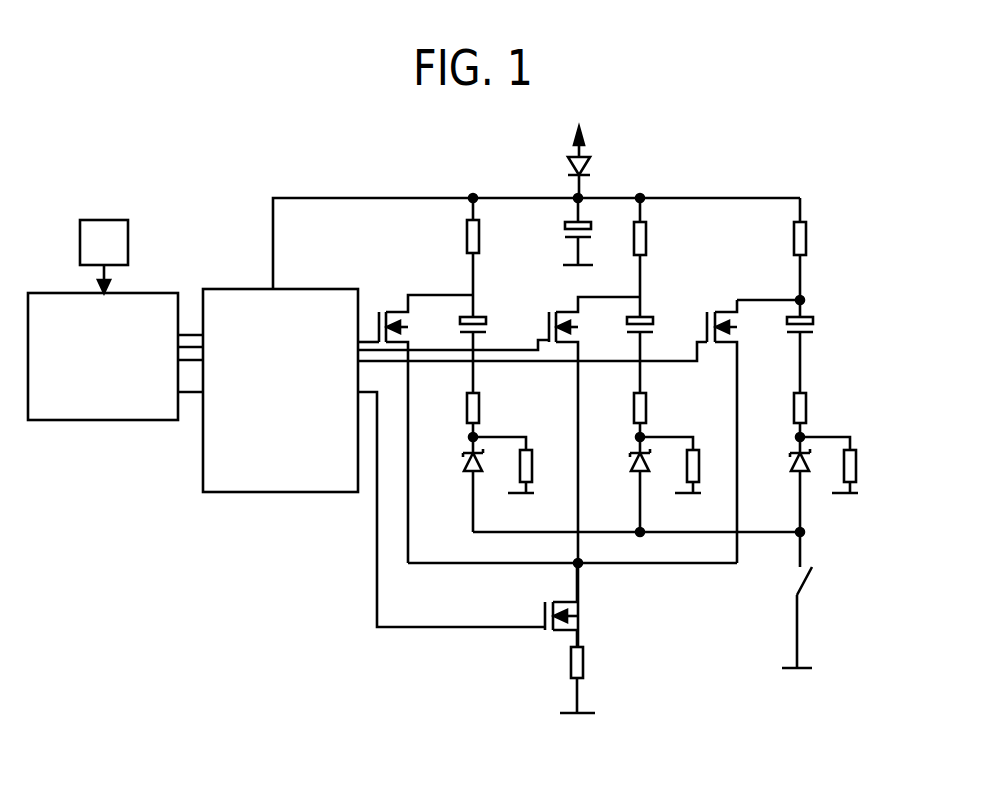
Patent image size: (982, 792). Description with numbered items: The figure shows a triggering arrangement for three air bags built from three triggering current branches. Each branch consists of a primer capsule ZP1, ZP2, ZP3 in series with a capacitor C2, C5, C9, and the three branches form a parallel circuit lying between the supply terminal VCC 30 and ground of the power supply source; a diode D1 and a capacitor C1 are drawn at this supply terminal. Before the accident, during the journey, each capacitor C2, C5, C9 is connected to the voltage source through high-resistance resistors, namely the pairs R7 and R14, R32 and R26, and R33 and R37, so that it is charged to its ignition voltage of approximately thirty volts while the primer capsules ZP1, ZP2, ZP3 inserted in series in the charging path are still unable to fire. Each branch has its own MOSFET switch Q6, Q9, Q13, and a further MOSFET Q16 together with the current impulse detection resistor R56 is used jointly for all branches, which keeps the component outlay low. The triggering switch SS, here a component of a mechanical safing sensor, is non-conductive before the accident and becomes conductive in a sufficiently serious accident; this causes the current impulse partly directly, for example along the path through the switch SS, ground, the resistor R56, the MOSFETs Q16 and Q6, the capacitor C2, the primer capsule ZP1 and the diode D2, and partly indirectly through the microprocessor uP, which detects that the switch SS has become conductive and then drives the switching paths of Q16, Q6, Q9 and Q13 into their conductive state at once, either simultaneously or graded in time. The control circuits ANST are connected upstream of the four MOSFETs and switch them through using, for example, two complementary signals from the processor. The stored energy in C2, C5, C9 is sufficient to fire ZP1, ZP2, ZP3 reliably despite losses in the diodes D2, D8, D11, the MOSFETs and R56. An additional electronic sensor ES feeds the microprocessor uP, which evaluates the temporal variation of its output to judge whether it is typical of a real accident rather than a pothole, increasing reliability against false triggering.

The electronic sensor ES is at (104, 256).
The microprocessor uP is at (103, 356).
The control circuit ANST is at (280, 390).
The supply terminal VCC30 30 is at (624, 139).
The diode D1 is at (598, 177).
The capacitor C1 is at (592, 246).
The high-resistance charging resistor R7 is at (493, 257).
The high-resistance charging resistor R32 is at (666, 257).
The high-resistance charging resistor R33 is at (825, 257).
The MOSFET switch Q6 is at (426, 429).
The MOSFET switch Q9 is at (594, 472).
The MOSFET switch Q13 is at (753, 431).
The common MOSFET switch Q16 is at (589, 605).
The capacitor C2 is at (491, 353).
The capacitor C5 is at (657, 353).
The capacitor C9 is at (817, 353).
The primer capsule ZP1 is at (498, 423).
The primer capsule ZP2 is at (666, 423).
The primer capsule ZP3 is at (825, 423).
The diode D2 is at (490, 490).
The diode D8 is at (657, 490).
The diode D11 is at (825, 508).
The high-resistance charging resistor R14 is at (528, 482).
The high-resistance charging resistor R26 is at (695, 482).
The high-resistance charging resistor R37 is at (854, 482).
The current impulse detection resistor R56 is at (594, 697).
The triggering switch SS is at (810, 629).